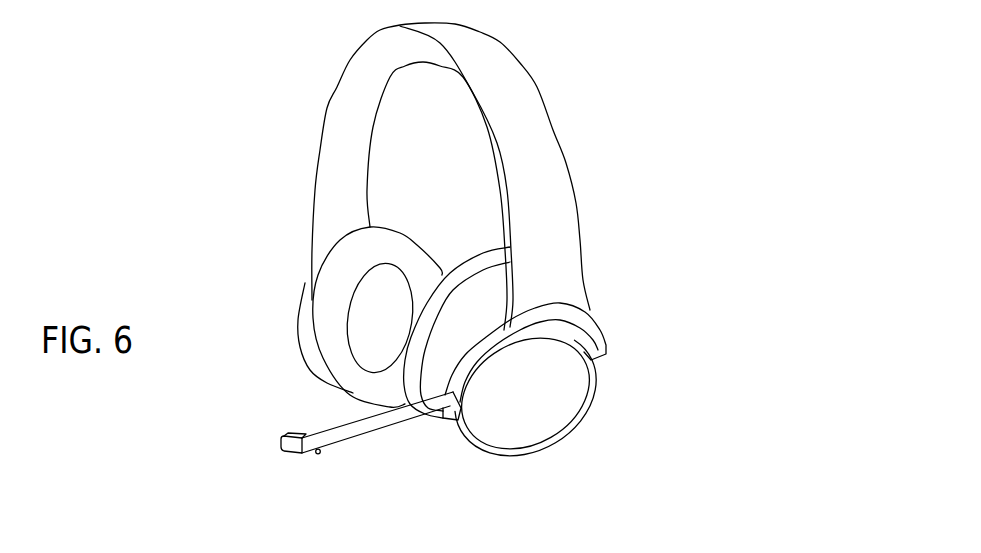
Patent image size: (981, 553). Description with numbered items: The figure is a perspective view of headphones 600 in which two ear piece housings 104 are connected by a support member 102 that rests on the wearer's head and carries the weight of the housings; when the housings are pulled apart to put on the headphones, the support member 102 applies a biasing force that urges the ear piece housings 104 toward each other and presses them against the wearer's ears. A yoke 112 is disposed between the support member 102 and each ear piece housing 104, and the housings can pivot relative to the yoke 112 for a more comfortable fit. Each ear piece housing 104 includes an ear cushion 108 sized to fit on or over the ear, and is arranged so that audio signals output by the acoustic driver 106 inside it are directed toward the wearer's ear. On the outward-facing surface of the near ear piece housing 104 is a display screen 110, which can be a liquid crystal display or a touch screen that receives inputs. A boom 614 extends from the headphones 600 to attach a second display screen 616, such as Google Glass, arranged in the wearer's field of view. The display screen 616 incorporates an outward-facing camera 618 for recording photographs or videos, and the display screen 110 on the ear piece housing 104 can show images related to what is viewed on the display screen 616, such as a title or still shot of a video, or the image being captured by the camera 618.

The headphones 600 is at (252, 453).
The support member 102 is at (550, 172).
The ear piece housing 104 is at (298, 284).
The acoustic driver 106 is at (375, 305).
The ear cushion 108 is at (328, 306).
The display screen 110 is at (552, 393).
The yoke 112 is at (598, 331).
The boom 614 is at (423, 411).
The display screen 616 is at (296, 436).
The outward-facing camera 618 is at (318, 456).